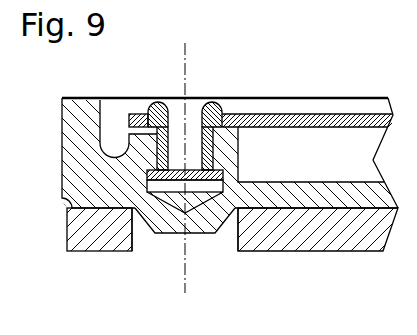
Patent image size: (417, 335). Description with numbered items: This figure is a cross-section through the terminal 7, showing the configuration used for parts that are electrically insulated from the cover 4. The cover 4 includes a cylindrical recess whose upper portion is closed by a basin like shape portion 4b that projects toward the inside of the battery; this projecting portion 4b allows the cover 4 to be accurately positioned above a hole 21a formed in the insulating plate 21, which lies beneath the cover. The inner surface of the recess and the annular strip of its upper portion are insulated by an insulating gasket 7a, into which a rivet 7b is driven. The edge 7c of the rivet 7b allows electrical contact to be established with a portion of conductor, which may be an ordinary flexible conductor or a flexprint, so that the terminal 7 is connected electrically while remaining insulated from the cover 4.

The cover 4 is at (208, 201).
The basin like shape portion 4b is at (200, 228).
The terminal 7 is at (210, 117).
The insulating gasket 7a is at (222, 147).
The rivet 7b is at (213, 153).
The edge 7c is at (157, 102).
The insulating plate 21 is at (202, 256).
The hole 21a is at (147, 238).